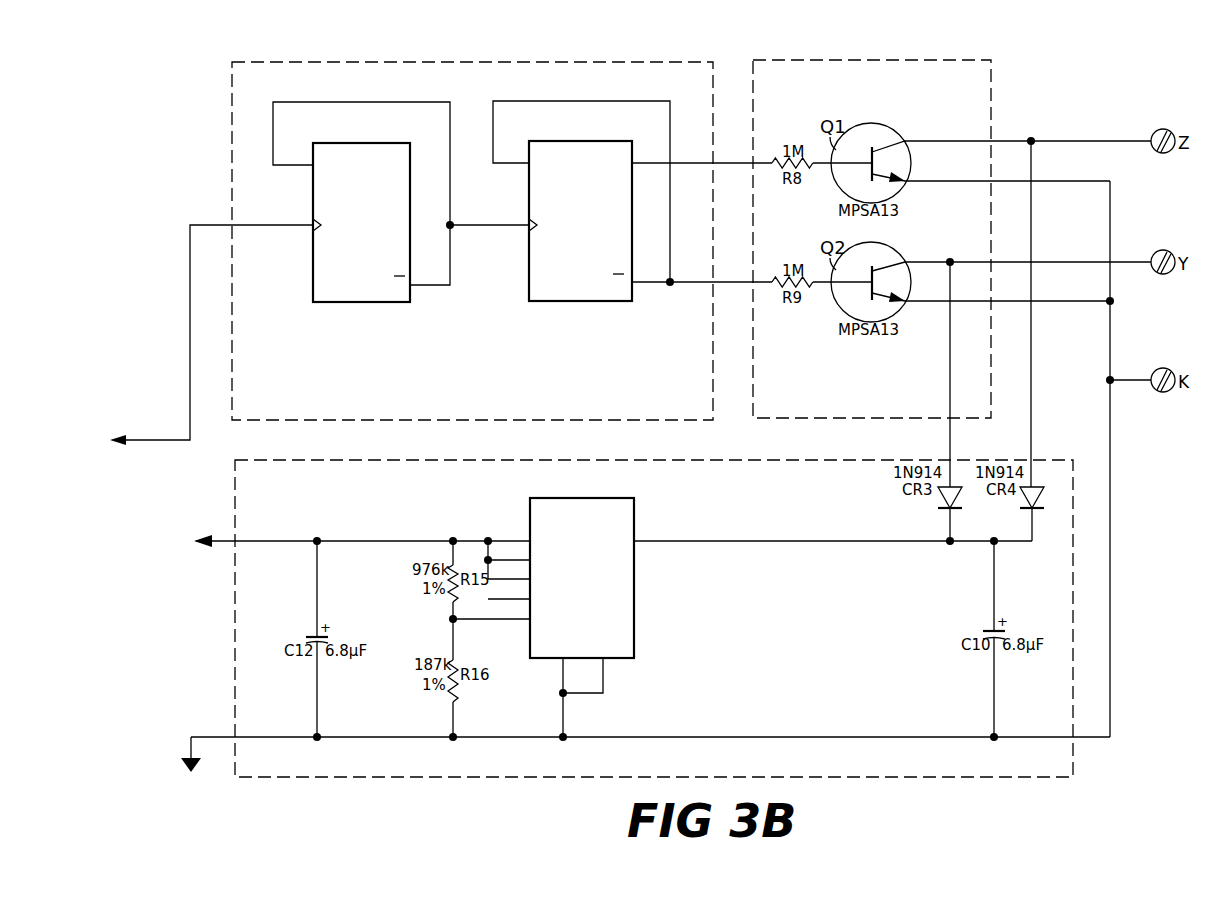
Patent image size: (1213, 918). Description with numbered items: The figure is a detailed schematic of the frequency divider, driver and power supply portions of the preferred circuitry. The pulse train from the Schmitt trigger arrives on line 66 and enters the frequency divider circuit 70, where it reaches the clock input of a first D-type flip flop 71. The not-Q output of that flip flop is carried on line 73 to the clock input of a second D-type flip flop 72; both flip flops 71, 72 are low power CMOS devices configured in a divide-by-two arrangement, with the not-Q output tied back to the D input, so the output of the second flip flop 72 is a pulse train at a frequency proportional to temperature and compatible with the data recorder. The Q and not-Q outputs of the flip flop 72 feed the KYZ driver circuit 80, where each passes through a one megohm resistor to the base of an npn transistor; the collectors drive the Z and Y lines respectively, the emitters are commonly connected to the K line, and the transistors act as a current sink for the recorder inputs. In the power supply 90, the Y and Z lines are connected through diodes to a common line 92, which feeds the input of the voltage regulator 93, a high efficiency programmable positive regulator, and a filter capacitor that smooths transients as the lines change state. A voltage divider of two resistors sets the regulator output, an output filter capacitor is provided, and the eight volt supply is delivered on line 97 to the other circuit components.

The line 66 is at (190, 307).
The frequency divider circuit 70 is at (232, 76).
The first D-type flip flop 71 is at (313, 255).
The second D-type flip flop 72 is at (529, 250).
The line 73 is at (500, 225).
The KYZ driver circuit 80 is at (991, 63).
The power supply 90 is at (1046, 460).
The common line 92 is at (814, 545).
The voltage regulator 93 is at (634, 600).
The line 97 is at (268, 541).